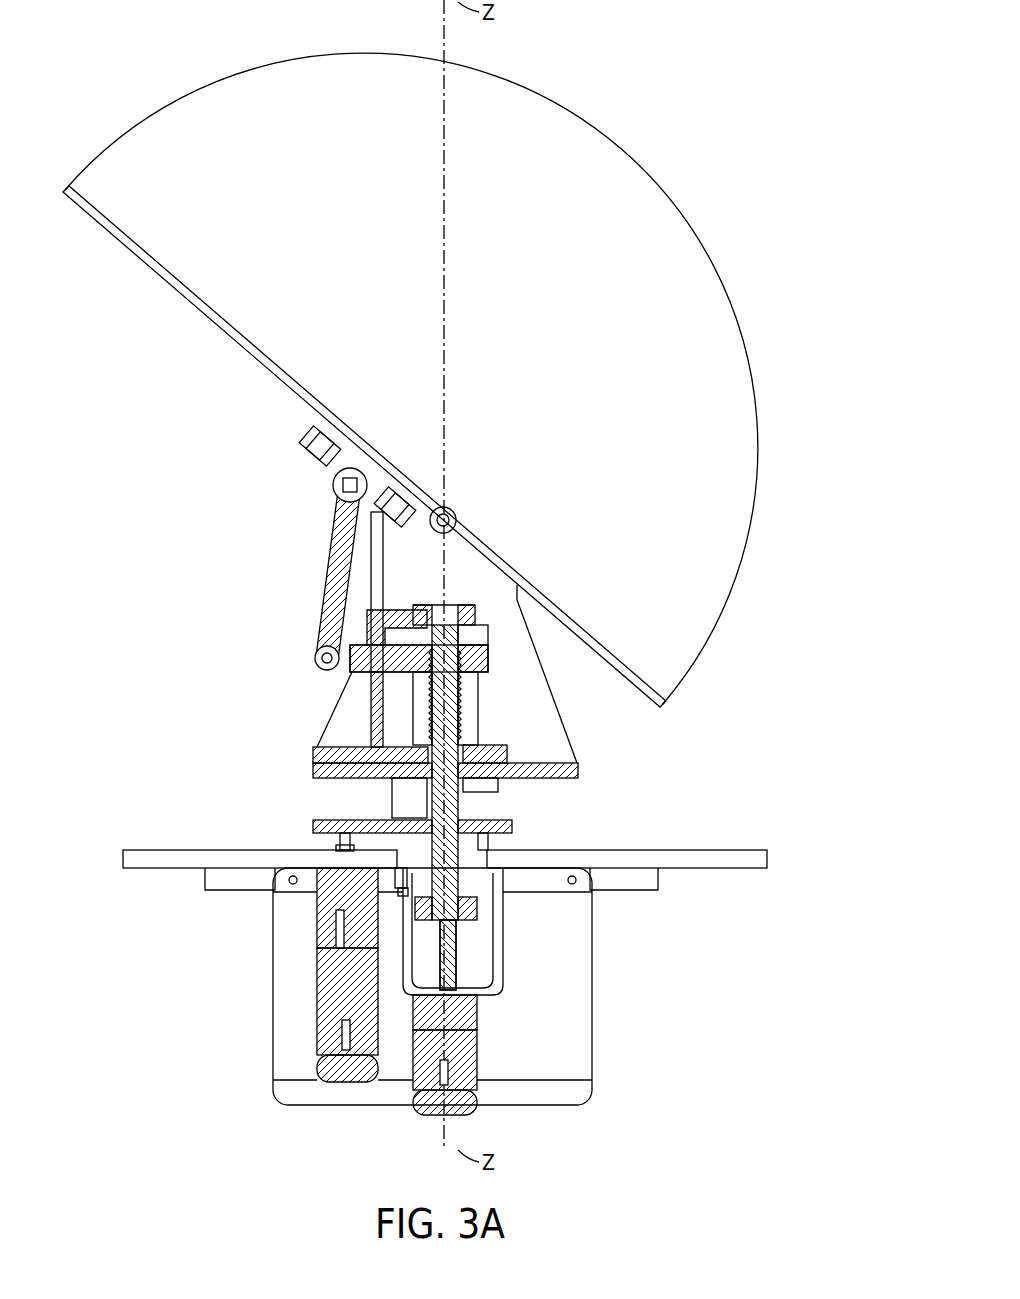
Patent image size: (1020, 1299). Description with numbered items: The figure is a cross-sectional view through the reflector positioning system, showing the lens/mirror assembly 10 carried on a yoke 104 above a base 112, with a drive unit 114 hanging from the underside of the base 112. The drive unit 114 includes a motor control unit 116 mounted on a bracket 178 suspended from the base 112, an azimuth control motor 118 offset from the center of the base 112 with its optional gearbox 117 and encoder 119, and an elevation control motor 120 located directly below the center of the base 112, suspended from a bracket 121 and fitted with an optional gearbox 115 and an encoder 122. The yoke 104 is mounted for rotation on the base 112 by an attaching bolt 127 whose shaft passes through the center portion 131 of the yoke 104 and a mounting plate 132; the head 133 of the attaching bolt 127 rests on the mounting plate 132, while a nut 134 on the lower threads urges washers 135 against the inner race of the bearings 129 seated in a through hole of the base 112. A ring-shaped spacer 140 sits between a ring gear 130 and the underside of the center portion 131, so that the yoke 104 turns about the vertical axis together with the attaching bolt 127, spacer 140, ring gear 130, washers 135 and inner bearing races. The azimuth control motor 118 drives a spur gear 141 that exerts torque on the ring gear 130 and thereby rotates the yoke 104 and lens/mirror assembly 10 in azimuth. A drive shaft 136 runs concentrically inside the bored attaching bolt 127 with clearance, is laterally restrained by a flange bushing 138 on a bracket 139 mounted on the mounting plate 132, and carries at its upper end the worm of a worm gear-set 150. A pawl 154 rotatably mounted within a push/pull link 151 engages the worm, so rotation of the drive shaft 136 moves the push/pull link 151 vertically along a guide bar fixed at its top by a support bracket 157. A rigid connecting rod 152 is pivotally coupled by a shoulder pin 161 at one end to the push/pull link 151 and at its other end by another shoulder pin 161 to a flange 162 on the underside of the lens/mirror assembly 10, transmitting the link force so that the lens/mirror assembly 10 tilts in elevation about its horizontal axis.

The lens/mirror assembly 10 is at (410, 363).
The yoke 104 is at (580, 680).
The base 112 is at (190, 850).
The drive unit 114 is at (413, 1005).
The gearbox 115 is at (477, 1010).
The motor control unit 116 is at (580, 925).
The gearbox 117 is at (303, 918).
The azimuth control motor 118 is at (300, 1010).
The encoder 119 is at (318, 1065).
The elevation control motor 120 is at (483, 1048).
The bracket 121 is at (503, 935).
The encoder 122 is at (480, 1108).
The attaching bolt 127 is at (465, 820).
The bearings 129 is at (405, 880).
The ring gear 130 is at (505, 830).
The center portion 131 is at (413, 746).
The mounting plate 132 is at (508, 765).
The head 133 is at (478, 745).
The nut 134 is at (470, 930).
The washers 135 is at (482, 898).
The drive shaft 136 is at (456, 740).
The flange bushing 138 is at (460, 610).
The bracket 139 is at (487, 622).
The ring-shaped spacer 140 is at (392, 812).
The spur gear 141 is at (313, 828).
The worm gear-set 150 is at (487, 638).
The push/pull link 151 is at (358, 690).
The connecting rod 152 is at (311, 569).
The pawl 154 is at (482, 664).
The support bracket 157 is at (398, 620).
The shoulder pin 161 is at (338, 500).
The flange 162 is at (320, 468).
The bracket 178 is at (205, 882).